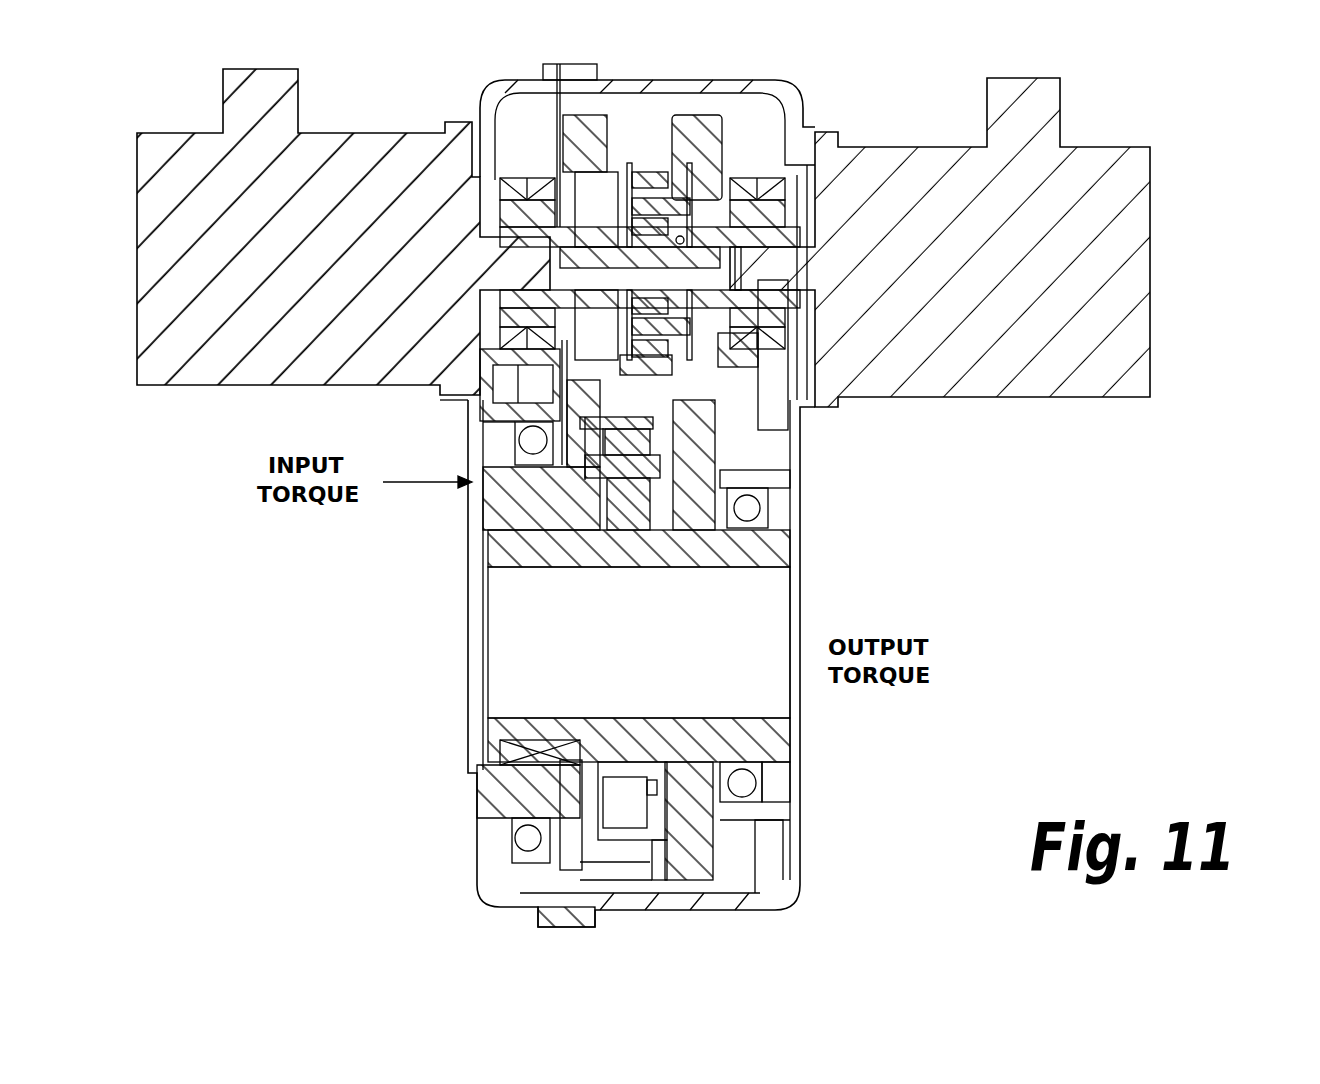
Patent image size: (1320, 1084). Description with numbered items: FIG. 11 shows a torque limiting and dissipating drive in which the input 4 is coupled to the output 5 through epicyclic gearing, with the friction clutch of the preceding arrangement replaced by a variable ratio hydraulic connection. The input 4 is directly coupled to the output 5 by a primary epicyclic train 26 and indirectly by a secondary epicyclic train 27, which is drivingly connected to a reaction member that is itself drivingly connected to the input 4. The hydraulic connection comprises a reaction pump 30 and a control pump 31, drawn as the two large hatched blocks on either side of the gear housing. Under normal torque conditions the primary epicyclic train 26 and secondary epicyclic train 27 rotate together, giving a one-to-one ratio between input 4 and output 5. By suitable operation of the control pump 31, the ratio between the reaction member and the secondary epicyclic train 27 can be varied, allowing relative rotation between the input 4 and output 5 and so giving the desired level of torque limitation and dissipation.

The reaction pump 30 is at (200, 365).
The control pump 31 is at (1130, 352).
The secondary epicyclic train 27 is at (678, 347).
The primary epicyclic train 26 is at (647, 490).
The input 4 is at (498, 485).
The output 5 is at (760, 553).